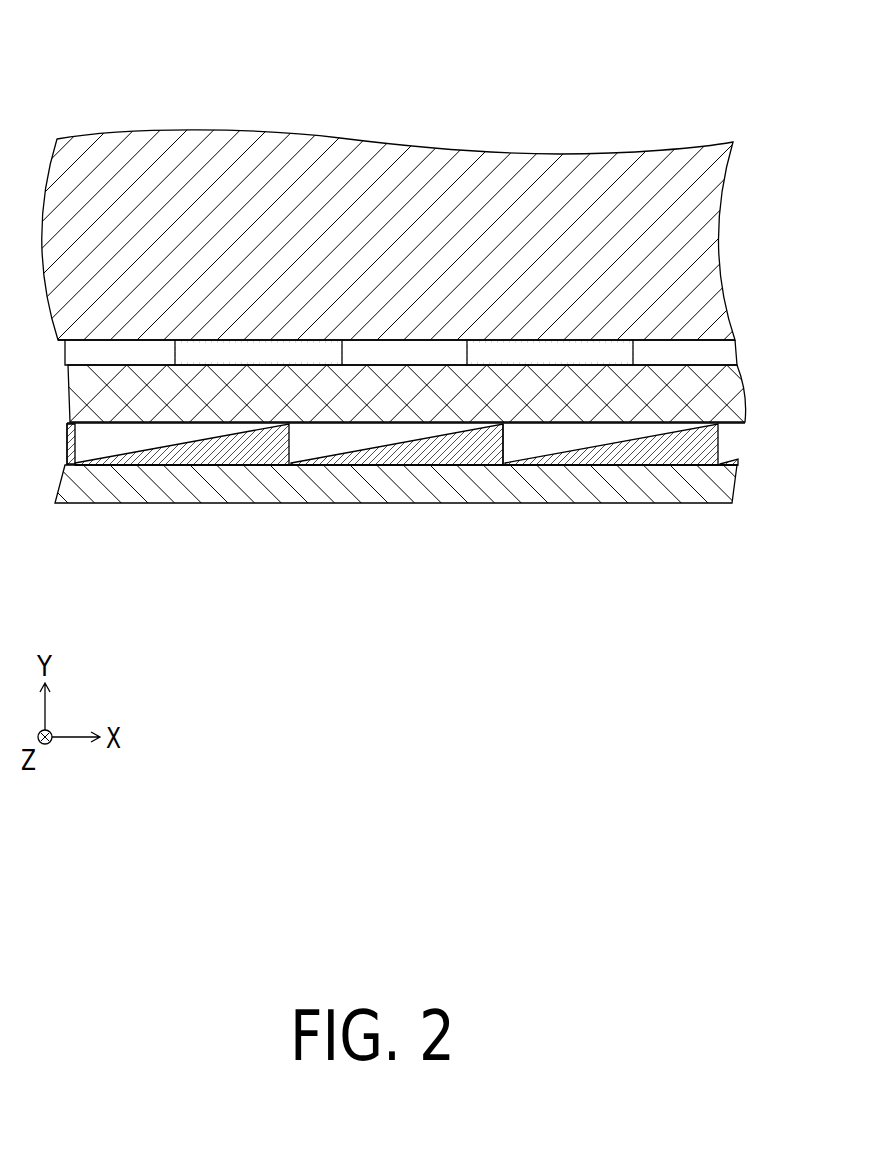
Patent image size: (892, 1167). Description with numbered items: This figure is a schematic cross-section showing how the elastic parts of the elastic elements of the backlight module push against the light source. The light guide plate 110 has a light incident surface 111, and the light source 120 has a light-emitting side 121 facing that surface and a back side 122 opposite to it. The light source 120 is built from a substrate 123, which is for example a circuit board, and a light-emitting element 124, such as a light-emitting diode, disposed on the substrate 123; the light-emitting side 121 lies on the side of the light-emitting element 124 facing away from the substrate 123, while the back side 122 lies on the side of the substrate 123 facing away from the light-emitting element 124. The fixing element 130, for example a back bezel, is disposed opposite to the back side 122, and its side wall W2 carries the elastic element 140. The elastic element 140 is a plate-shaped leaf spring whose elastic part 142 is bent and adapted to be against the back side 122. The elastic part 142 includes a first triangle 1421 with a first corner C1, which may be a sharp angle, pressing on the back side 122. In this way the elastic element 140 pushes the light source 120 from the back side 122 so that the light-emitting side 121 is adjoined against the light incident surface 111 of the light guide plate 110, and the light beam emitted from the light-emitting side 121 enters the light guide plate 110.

The light guide plate 110 is at (692, 250).
The light incident surface 111 is at (722, 346).
The light source 120 is at (407, 228).
The light-emitting side 121 is at (502, 340).
The back side 122 is at (612, 425).
The substrate 123 is at (669, 400).
The light-emitting element 124 is at (613, 356).
The fixing element 130 is at (397, 519).
The elastic element 140 is at (406, 525).
The elastic part 142 is at (440, 468).
The first triangle 1421 is at (398, 468).
The first corner C1 is at (521, 425).
The side wall W2 is at (683, 490).